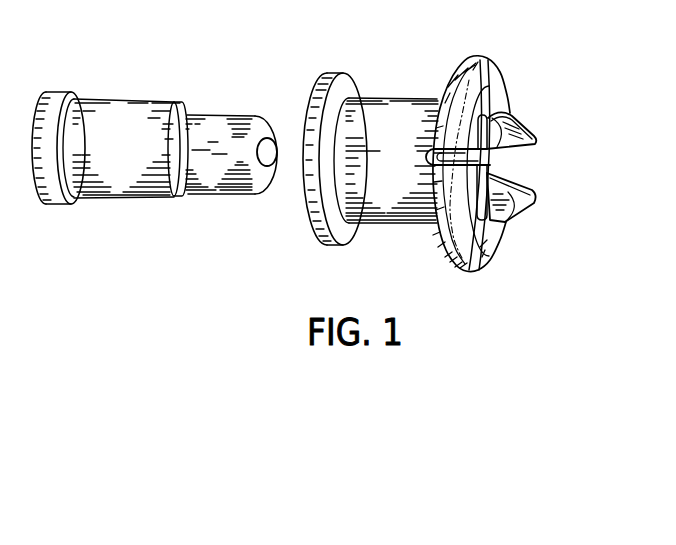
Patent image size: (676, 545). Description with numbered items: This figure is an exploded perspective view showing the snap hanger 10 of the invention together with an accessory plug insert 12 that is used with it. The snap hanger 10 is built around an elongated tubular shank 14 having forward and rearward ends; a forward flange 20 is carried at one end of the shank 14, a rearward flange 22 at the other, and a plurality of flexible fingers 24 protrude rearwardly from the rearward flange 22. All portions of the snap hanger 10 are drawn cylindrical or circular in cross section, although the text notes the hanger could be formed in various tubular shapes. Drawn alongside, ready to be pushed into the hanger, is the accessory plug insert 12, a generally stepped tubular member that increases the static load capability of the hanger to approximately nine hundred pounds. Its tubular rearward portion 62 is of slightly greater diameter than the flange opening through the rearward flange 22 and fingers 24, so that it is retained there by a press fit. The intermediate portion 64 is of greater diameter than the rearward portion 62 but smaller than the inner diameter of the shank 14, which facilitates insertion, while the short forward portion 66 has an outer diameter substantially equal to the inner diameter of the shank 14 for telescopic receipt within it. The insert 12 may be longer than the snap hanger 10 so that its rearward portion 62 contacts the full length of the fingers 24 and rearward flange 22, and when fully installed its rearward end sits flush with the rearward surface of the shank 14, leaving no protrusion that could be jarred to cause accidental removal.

The snap hanger 10 is at (443, 58).
The accessory plug insert 12 is at (133, 98).
The elongated tubular shank 14 is at (412, 127).
The forward flange 20 is at (357, 87).
The rearward flange 22 is at (463, 60).
The flexible fingers 24 is at (531, 122).
The tubular rearward portion 62 is at (228, 114).
The intermediate portion 64 is at (142, 125).
The short forward portion 66 is at (52, 98).